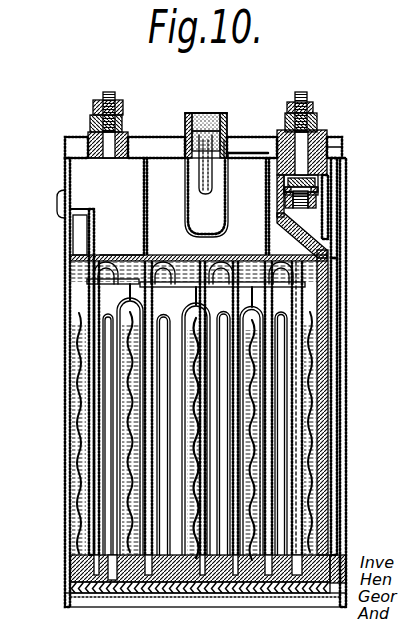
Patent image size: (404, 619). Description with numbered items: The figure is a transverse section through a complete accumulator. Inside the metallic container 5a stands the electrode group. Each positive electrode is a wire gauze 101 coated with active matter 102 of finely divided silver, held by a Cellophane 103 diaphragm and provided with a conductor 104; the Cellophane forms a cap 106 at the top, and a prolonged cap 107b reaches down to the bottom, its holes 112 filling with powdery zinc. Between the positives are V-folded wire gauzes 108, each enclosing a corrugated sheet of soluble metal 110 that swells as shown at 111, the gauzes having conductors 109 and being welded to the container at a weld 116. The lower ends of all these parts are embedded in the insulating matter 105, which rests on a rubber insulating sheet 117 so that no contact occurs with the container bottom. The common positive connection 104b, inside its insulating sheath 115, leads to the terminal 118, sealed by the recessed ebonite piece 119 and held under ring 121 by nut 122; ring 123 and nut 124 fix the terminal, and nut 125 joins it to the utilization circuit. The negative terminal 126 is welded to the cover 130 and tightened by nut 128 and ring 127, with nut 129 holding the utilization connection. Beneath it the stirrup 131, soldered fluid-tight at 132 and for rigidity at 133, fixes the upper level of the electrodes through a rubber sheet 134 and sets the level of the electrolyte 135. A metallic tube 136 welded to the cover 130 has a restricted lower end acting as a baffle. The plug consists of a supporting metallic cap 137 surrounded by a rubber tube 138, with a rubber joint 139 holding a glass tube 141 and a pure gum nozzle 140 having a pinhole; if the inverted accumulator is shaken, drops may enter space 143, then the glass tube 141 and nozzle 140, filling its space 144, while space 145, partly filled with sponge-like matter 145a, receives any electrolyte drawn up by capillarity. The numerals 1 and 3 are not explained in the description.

The electrode plate 1 is at (301, 431).
The electrode plate 3 is at (327, 408).
The metallic container 5a is at (57, 433).
The wire gauze 101 is at (109, 426).
The active matter 102 is at (166, 440).
The Cellophane 103 is at (51, 408).
The conductor 104 is at (177, 597).
The common positive connection 104b is at (351, 400).
The insulating matter 105 is at (173, 568).
The cap 106 is at (166, 295).
The prolonged cap 107b is at (281, 207).
The wire gauze 108 is at (200, 293).
The conductor 109 is at (60, 379).
The corrugated sheet of soluble metal 110 is at (199, 436).
The swelling 111 is at (200, 408).
The holes 112 is at (200, 433).
The insulating sheath 115 is at (355, 406).
The weld 116 is at (50, 195).
The insulating sheet 117 is at (354, 382).
The terminal 118 is at (331, 176).
The recessed ebonite piece 119 is at (331, 189).
The ring 121 is at (332, 203).
The nut 122 is at (327, 194).
The ring 123 is at (321, 117).
The nut 124 is at (317, 99).
The nut 125 is at (287, 91).
The negative terminal 126 is at (100, 92).
The ring 127 is at (87, 133).
The nut 128 is at (87, 111).
The nut 129 is at (90, 94).
The cover 130 is at (66, 142).
The stirrup 131 is at (122, 222).
The soldered joint 132 is at (107, 174).
The soldered joint 133 is at (252, 145).
The rubber sheet 134 is at (127, 206).
The electrolyte 135 is at (198, 236).
The metallic tube 136 is at (191, 194).
The supporting metallic cap 137 is at (174, 114).
The rubber tube 138 is at (184, 123).
The rubber joint 139 is at (245, 136).
The nozzle 140 is at (243, 128).
The glass tube 141 is at (231, 171).
The space 143 is at (192, 195).
The space 144 is at (204, 91).
The space 145 is at (179, 130).
The sponge-like matter 145a is at (216, 109).